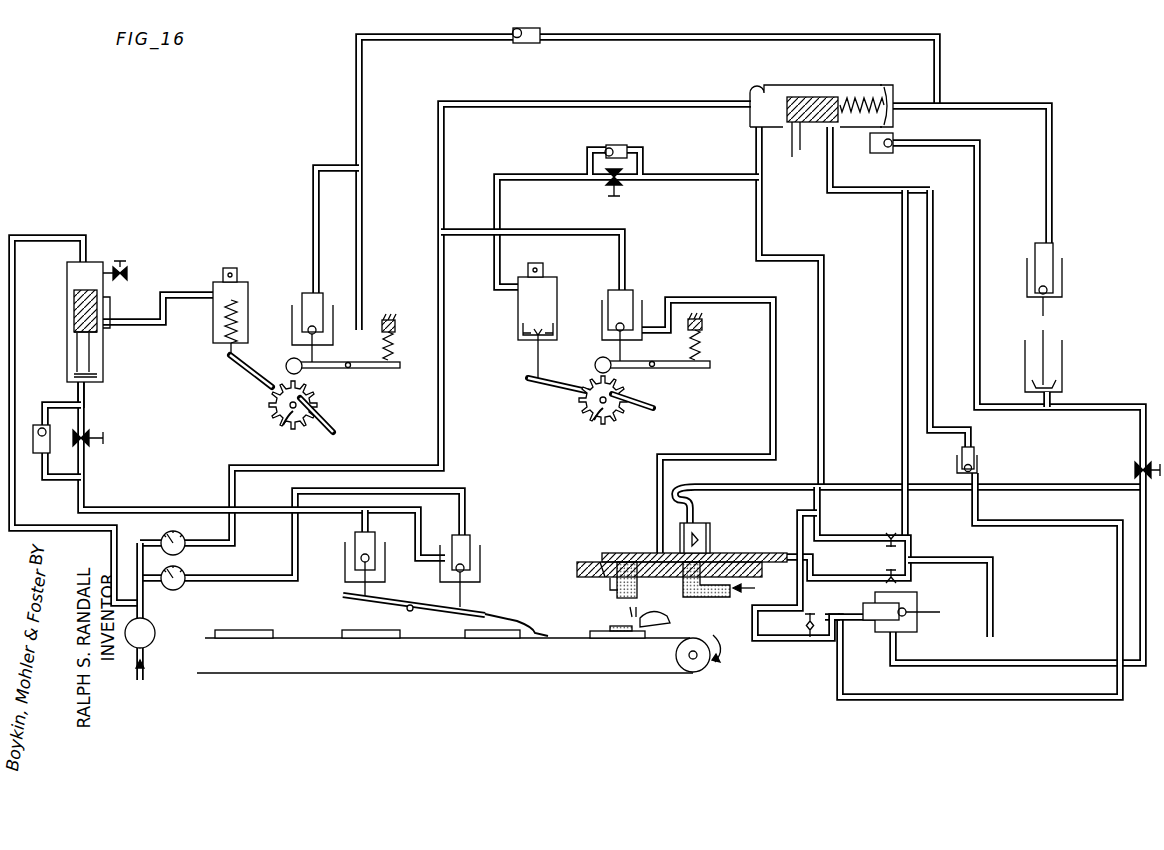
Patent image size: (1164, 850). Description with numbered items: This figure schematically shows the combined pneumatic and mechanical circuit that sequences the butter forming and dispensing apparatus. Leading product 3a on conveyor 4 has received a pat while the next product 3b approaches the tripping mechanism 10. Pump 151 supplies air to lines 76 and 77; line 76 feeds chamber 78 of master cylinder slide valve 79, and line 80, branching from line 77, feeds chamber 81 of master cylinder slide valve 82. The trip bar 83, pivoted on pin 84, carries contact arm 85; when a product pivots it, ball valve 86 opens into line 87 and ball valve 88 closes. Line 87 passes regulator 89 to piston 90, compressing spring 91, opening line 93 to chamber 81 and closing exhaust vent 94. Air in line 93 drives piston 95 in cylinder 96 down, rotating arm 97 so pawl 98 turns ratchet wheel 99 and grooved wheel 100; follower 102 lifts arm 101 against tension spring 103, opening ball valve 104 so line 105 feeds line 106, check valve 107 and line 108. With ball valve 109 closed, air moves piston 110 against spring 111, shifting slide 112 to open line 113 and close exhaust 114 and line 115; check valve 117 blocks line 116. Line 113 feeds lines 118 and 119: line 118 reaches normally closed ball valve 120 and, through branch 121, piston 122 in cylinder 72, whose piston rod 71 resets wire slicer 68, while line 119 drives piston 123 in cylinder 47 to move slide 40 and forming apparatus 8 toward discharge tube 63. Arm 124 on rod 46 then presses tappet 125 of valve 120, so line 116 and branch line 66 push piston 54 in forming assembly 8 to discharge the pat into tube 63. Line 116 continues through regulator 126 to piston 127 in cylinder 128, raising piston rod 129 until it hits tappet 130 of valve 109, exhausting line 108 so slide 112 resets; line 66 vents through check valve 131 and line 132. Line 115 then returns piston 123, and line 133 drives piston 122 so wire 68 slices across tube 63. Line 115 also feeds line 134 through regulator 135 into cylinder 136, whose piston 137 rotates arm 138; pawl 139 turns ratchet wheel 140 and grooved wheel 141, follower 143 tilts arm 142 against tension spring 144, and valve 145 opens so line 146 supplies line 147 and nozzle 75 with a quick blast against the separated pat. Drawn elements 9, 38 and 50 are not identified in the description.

The leading product 3a is at (600, 641).
The next product 3b is at (498, 641).
The conveyor 4 is at (305, 640).
The forming apparatus 8 is at (712, 546).
The fluid flow 9 is at (595, 589).
The tripping mechanism 10 is at (476, 604).
The plate 38 is at (590, 563).
The slide 40 is at (647, 550).
The rod 46 is at (833, 539).
The cylinder 47 is at (912, 547).
The conduit 50 is at (700, 520).
The piston 54 is at (712, 536).
The discharge tube 63 is at (620, 598).
The branch line 66 is at (1038, 488).
The wire slicer 68 is at (662, 627).
The piston rod 71 is at (730, 640).
The cylinder 72 is at (784, 642).
The nozzle 75 is at (628, 606).
The line 76 is at (635, 101).
The line 77 is at (464, 493).
The chamber 78 is at (755, 88).
The master cylinder slide valve 79 is at (795, 84).
The line 80 is at (37, 238).
The chamber 81 is at (97, 262).
The master cylinder slide valve 82 is at (106, 362).
The trip bar 83 is at (358, 602).
The pin 84 is at (406, 606).
The contact arm 85 is at (514, 630).
The ball valve 86 is at (472, 542).
The line 87 is at (421, 518).
The ball valve 88 is at (354, 540).
The regulator 89 is at (106, 437).
The piston 90 is at (92, 385).
The spring 91 is at (76, 368).
The line 93 is at (120, 324).
The exhaust vent 94 is at (112, 298).
The spring-urged piston 95 is at (236, 282).
The cylinder 96 is at (249, 300).
The centrally pivoted arm 97 is at (240, 375).
The pawl 98 is at (330, 414).
The ratchet wheel 99 is at (280, 410).
The axially grooved wheel 100 is at (290, 430).
The arm 101 is at (333, 370).
The follower 102 is at (288, 360).
The tension spring 103 is at (394, 340).
The ball valve 104 is at (318, 314).
The line 105 is at (314, 216).
The line 106 is at (358, 104).
The one-way check valve 107 is at (526, 28).
The line 108 is at (996, 108).
The ball valve 109 is at (1045, 272).
The piston 110 is at (897, 95).
The spring 111 is at (843, 100).
The slide 112 is at (786, 108).
The line 113 is at (828, 173).
The exhaust 114 is at (807, 142).
The line 115 is at (756, 165).
The line 116 is at (981, 173).
The one-way check valve 117 is at (892, 138).
The line 118 is at (931, 229).
The line 119 is at (900, 238).
The ball valve 120 is at (895, 605).
The branch 121 is at (827, 613).
The piston 122 is at (826, 641).
The piston 123 is at (908, 572).
The arm 124 is at (994, 621).
The tappet 125 is at (922, 616).
The regulator 126 is at (1133, 470).
The piston 127 is at (1052, 393).
The cylinder 128 is at (1064, 362).
The piston rod 129 is at (1046, 334).
The tappet 130 is at (1048, 309).
The check valve 131 is at (978, 460).
The line 132 is at (974, 435).
The line 133 is at (796, 532).
The line 134 is at (704, 182).
The regulator 135 is at (617, 196).
The cylinder 136 is at (516, 306).
The piston 137 is at (522, 330).
The arm 138 is at (545, 394).
The pawl 139 is at (642, 394).
The ratchet wheel 140 is at (582, 412).
The grooved wheel 141 is at (605, 424).
The pivoted arm 142 is at (705, 368).
The follower 143 is at (597, 360).
The tension spring 144 is at (704, 341).
The valve 145 is at (633, 300).
The line 146 is at (600, 228).
The line 147 is at (737, 298).
The pump 151 is at (152, 647).